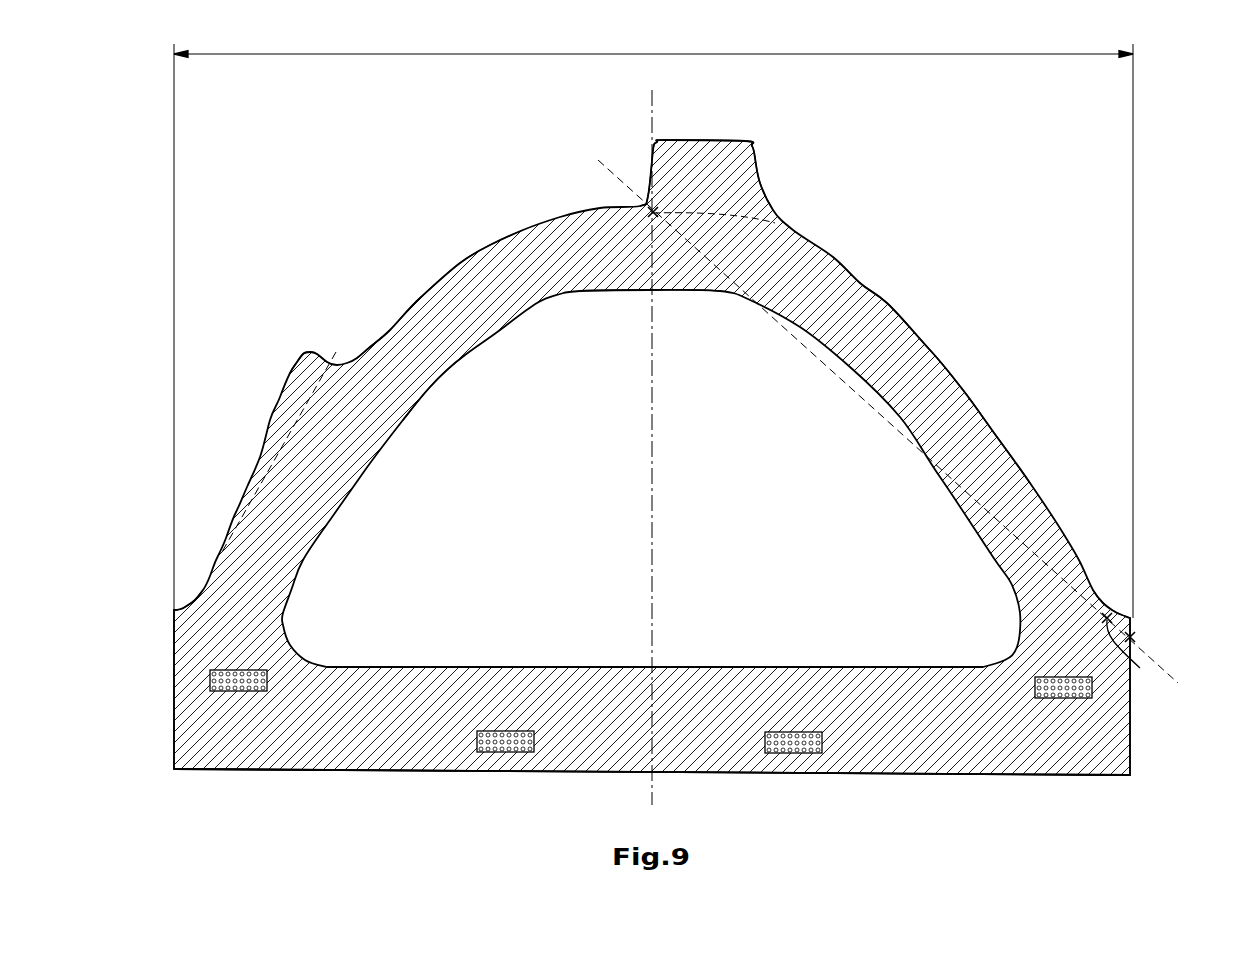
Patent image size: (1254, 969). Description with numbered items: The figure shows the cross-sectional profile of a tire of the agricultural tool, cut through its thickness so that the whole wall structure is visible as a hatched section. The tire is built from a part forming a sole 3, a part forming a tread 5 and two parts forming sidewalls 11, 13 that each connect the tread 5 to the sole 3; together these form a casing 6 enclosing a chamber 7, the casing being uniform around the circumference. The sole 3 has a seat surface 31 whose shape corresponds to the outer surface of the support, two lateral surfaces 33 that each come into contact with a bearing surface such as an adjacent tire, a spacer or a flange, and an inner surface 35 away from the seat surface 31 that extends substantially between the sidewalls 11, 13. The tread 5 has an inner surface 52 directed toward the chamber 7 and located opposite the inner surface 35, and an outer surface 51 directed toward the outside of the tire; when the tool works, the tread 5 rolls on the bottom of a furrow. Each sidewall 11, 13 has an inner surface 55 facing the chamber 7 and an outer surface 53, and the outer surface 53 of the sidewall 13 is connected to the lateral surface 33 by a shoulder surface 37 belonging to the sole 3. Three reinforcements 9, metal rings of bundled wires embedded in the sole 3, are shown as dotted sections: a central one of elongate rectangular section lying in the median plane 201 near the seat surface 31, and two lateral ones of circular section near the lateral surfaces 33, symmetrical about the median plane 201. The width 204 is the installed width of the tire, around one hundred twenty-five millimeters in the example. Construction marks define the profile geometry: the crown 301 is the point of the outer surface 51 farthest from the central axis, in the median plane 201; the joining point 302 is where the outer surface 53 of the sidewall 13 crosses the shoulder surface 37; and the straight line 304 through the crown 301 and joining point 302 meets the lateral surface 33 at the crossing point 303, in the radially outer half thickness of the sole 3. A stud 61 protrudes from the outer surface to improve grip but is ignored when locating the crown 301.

The sole 3 is at (888, 713).
The tread 5 is at (968, 428).
The casing 6 is at (873, 250).
The chamber 7 is at (593, 398).
The reinforcements 9 is at (270, 668).
The sidewall 11 is at (387, 355).
The sidewall 13 is at (912, 355).
The seat surface 31 is at (393, 771).
The lateral surface 33 is at (172, 677).
The inner surface 35 is at (570, 667).
The shoulder surface 37 is at (200, 590).
The outer surface 51 is at (658, 185).
The inner surface 52 is at (683, 291).
The outer surface 53 is at (490, 243).
The inner surface 55 is at (424, 401).
The stud 61 is at (307, 390).
The median plane 201 is at (652, 468).
The width 204 is at (920, 55).
The crown 301 is at (651, 207).
The joining point 302 is at (1140, 668).
The crossing point 303 is at (1137, 638).
The straight line 304 is at (1162, 664).